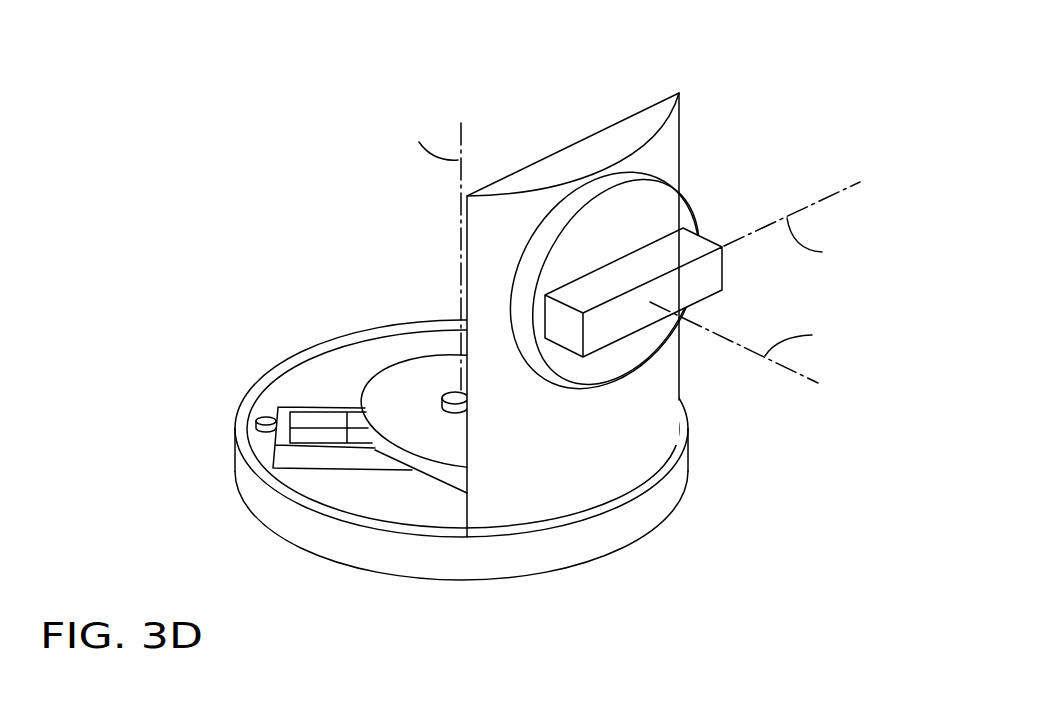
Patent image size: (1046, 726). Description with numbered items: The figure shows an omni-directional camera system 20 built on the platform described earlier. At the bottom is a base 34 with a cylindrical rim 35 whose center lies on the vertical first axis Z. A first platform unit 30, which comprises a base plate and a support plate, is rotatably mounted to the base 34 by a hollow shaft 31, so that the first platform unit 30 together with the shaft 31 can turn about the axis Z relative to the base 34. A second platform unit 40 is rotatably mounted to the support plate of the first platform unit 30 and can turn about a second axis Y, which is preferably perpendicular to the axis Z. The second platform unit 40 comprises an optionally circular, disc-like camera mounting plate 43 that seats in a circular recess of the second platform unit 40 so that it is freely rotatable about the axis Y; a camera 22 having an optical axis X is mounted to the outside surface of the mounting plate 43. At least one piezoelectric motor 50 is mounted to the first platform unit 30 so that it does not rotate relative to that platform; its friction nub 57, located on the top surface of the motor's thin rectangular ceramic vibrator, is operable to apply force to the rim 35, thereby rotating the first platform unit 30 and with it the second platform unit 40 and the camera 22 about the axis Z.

The omni-directional camera system 20 is at (268, 152).
The camera 22 is at (667, 250).
The first platform unit 30 is at (418, 435).
The hollow shaft 31 is at (453, 395).
The base 34 is at (422, 508).
The cylindrical rim 35 is at (252, 391).
The second platform unit 40 is at (697, 97).
The camera mounting plate 43 is at (640, 353).
The piezoelectric motor 50 is at (297, 460).
The friction nub 57 is at (258, 421).